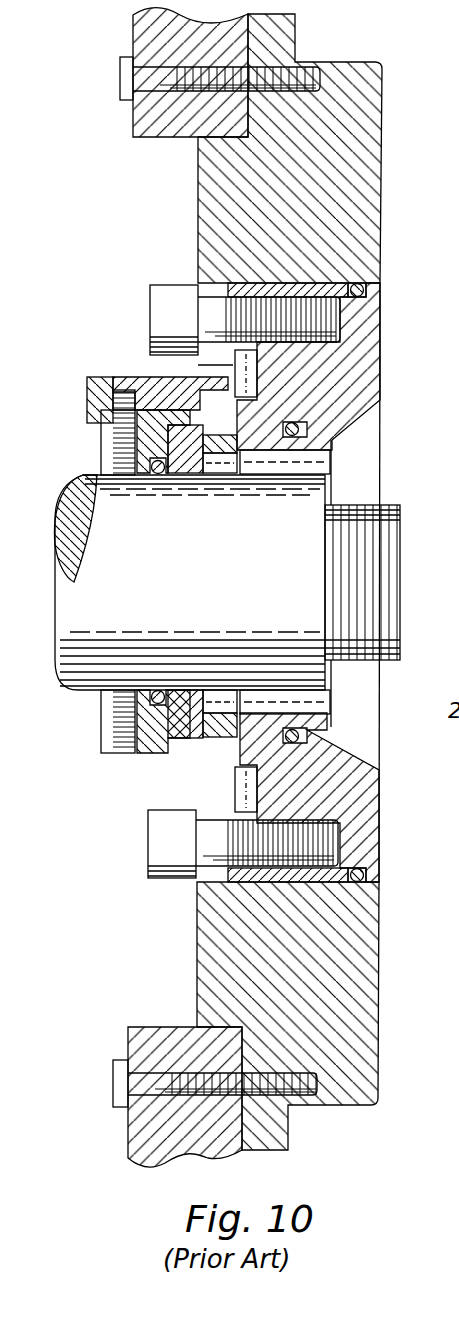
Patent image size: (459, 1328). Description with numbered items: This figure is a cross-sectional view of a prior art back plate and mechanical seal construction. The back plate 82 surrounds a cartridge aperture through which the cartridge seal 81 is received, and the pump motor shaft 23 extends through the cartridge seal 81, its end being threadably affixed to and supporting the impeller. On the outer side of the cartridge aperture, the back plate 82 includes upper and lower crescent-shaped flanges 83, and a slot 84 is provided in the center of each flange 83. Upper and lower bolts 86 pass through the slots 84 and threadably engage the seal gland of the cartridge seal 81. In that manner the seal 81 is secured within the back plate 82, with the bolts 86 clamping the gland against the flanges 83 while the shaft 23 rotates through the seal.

The back plate 82 is at (337, 62).
The slot 84 is at (213, 290).
The bolts 86 is at (163, 320).
The crescent-shaped flanges 83 is at (197, 361).
The cartridge seal 81 is at (93, 457).
The pump motor shaft 23 is at (88, 690).